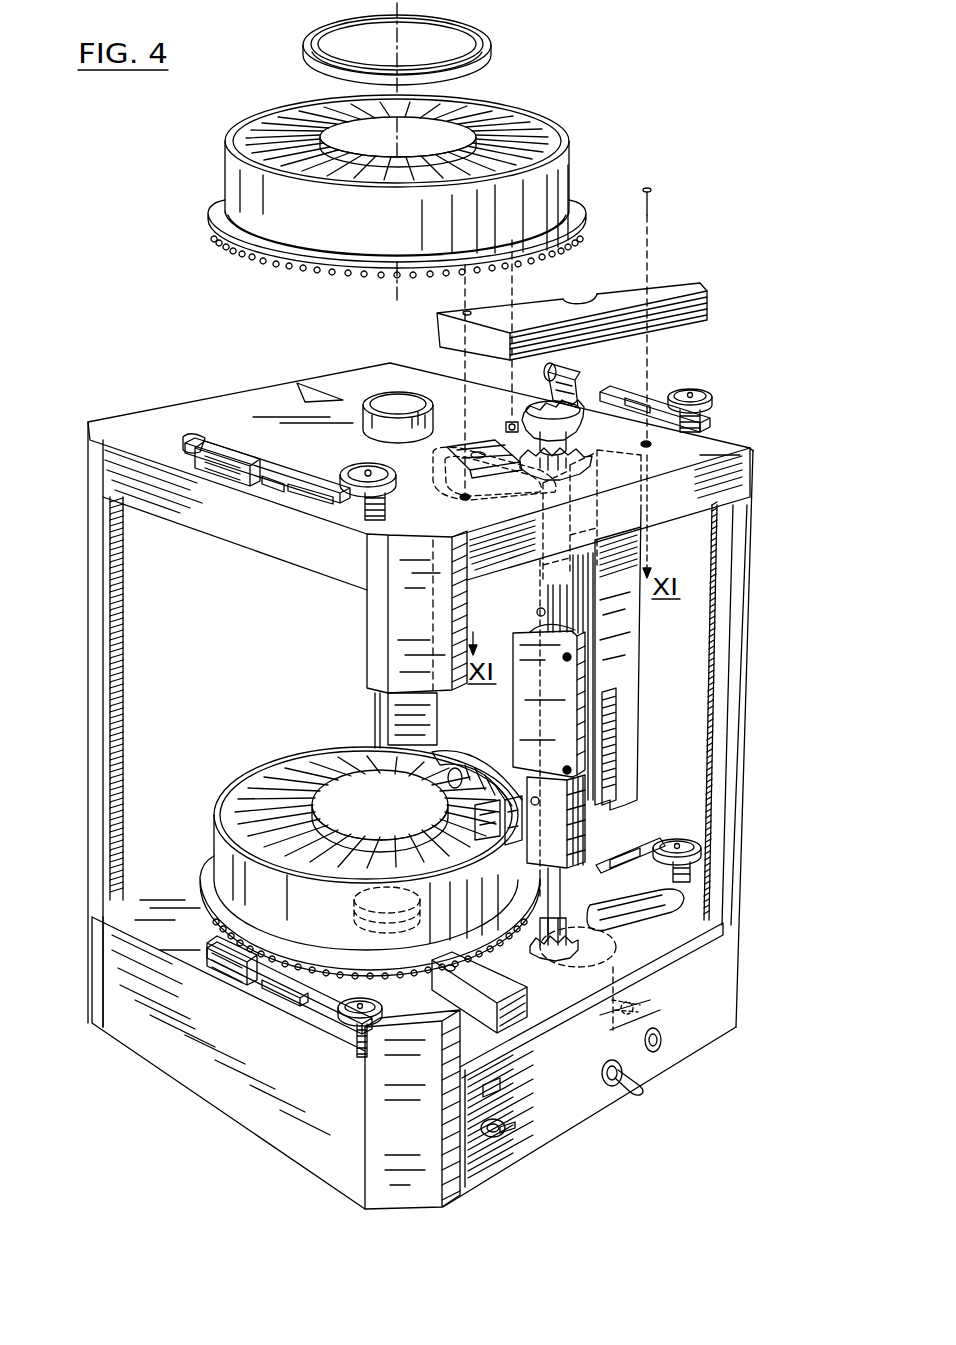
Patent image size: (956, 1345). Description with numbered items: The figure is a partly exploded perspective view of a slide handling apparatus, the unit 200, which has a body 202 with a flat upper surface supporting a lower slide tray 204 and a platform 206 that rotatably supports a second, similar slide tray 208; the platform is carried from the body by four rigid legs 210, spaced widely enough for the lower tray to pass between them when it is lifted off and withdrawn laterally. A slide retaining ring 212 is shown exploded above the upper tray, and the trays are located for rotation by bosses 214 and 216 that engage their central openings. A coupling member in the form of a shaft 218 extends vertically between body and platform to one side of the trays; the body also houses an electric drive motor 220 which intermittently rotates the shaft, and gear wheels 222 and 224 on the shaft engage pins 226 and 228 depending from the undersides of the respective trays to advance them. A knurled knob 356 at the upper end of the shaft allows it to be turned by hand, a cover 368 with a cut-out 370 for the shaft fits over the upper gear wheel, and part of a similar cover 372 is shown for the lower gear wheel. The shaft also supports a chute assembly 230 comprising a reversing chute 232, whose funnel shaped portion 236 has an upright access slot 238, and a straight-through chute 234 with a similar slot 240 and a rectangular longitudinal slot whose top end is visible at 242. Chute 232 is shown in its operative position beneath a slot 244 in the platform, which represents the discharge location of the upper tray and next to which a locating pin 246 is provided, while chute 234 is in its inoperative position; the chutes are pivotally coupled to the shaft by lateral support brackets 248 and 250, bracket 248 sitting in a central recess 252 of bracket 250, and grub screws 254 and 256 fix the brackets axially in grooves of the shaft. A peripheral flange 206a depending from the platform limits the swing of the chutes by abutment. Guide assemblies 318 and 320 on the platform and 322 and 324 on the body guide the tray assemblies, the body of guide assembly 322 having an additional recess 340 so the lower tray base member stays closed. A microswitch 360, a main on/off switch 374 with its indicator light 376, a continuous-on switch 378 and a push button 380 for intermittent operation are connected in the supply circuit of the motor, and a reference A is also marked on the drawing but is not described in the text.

The unit 200 is at (619, 172).
The body 202 is at (697, 930).
The lower slide tray 204 is at (249, 753).
The platform 206 is at (735, 437).
The peripheral flange 206a is at (702, 508).
The second slide tray 208 is at (548, 116).
The rigid legs 210 is at (103, 574).
The slide retaining ring 212 is at (487, 43).
The boss 214 is at (352, 906).
The boss 216 is at (368, 435).
The shaft 218 is at (452, 934).
The electric drive motor 220 is at (648, 978).
The gear wheel 222 is at (566, 978).
The gear wheel 224 is at (605, 469).
The pins 226 is at (367, 968).
The pins 228 is at (268, 272).
The chute assembly 230 is at (623, 720).
The chute 232 is at (440, 791).
The chute 234 is at (640, 722).
The funnel shaped portion 236 is at (440, 745).
The upright slot 238 is at (433, 750).
The slot 240 is at (616, 748).
The top end of the slot 242 is at (616, 515).
The slot 244 is at (473, 443).
The pin 246 is at (506, 427).
The lateral support bracket 248 is at (527, 707).
The lateral support bracket 250 is at (585, 598).
The central recess 252 is at (572, 656).
The grub screw 254 is at (563, 770).
The grub screw 256 is at (585, 720).
The guide assembly 318 is at (296, 505).
The guide assembly 320 is at (628, 391).
The guide assembly 322 is at (320, 1045).
The guide assembly 324 is at (653, 828).
The additional recess 340 is at (280, 1020).
The knurled knob 356 is at (567, 402).
The microswitch 360 is at (624, 903).
The cover 368 is at (705, 288).
The cut-out 370 is at (582, 298).
The cover 372 is at (512, 1022).
The main on/off switch 374 is at (515, 1132).
The indicator light 376 is at (458, 1074).
The continuous on switch 378 is at (640, 1090).
The push button 380 is at (662, 1043).
The direction arrow A is at (502, 915).